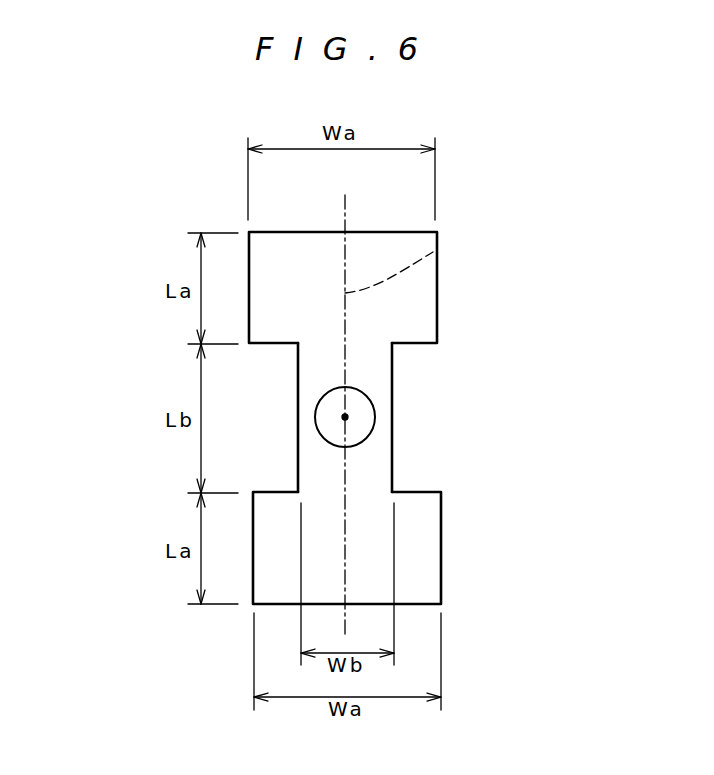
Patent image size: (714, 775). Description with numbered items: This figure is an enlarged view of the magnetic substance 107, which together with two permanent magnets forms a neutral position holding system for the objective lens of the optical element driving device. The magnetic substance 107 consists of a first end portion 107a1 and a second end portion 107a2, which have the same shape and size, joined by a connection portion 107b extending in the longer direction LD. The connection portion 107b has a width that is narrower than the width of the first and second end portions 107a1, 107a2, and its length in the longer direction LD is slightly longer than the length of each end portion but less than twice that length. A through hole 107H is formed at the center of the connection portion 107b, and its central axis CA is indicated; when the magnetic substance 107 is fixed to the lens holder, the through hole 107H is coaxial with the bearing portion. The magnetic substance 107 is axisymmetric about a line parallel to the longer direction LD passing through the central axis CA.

The magnetic substance 107 is at (108, 181).
The first end portion 107a1 is at (432, 312).
The second end portion 107a2 is at (435, 571).
The connection portion 107b is at (387, 400).
The through hole 107H is at (357, 402).
The central axis CA is at (345, 417).
The longer direction LD is at (433, 252).